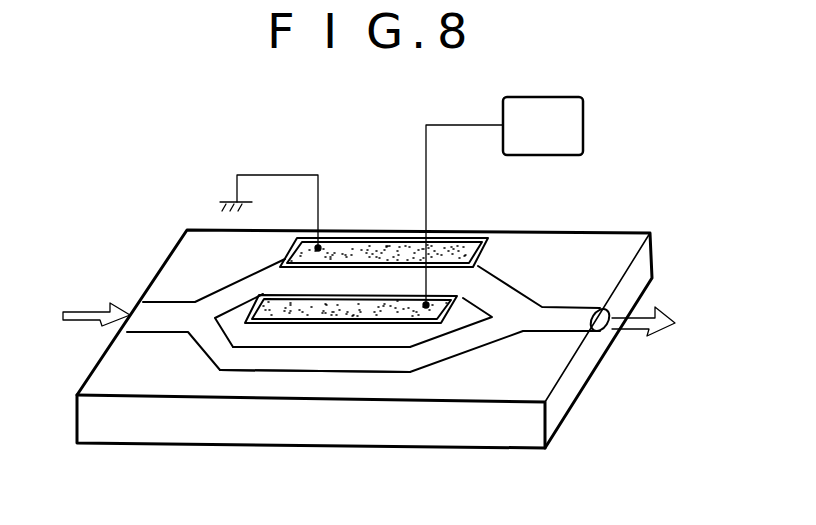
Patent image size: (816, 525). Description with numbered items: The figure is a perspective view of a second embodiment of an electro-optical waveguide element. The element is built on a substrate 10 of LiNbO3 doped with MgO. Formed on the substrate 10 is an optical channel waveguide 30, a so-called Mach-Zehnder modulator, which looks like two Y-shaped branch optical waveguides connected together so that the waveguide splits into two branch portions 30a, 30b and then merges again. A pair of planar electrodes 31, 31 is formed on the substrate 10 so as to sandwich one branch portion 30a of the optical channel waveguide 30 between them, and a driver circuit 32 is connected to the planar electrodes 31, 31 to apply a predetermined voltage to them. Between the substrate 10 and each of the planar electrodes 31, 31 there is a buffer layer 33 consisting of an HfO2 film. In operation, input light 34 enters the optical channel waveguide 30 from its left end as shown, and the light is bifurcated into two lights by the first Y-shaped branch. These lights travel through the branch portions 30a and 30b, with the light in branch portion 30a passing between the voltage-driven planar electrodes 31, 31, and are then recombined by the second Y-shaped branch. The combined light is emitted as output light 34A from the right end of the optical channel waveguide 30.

The substrate 10 is at (120, 364).
The optical channel waveguide 30 is at (170, 292).
The branch portion 30a is at (363, 273).
The branch portion 30b is at (352, 360).
The planar electrode 31 is at (463, 298).
The driver circuit 32 is at (525, 141).
The buffer layer 33 is at (376, 280).
The input light 34 is at (95, 304).
The output light 34A is at (652, 314).